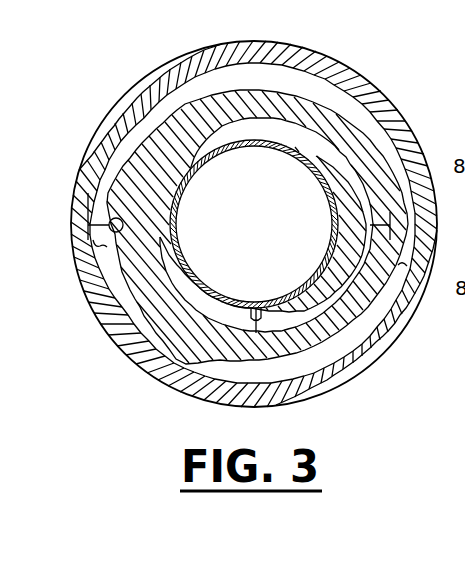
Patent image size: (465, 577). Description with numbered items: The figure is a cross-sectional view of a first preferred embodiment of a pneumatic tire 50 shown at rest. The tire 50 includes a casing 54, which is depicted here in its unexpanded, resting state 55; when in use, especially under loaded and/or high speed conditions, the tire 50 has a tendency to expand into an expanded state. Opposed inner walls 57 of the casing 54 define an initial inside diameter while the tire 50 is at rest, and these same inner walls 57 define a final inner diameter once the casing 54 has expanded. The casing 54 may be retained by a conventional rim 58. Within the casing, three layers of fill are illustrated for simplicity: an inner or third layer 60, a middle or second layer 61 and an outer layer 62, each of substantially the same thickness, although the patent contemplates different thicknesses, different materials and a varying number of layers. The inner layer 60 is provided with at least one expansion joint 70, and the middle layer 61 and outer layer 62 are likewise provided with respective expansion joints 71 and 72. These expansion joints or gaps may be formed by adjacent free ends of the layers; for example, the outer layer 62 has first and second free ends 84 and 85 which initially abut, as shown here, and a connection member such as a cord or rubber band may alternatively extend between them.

The pneumatic tire 50 is at (383, 367).
The casing 54 is at (336, 382).
The unexpanded, resting state 55 is at (405, 337).
The inner walls 57 is at (166, 372).
The rim 58 is at (333, 223).
The inner or third layer 60 is at (342, 177).
The middle or second layer 61 is at (293, 103).
The outer layer 62 is at (357, 117).
The expansion joint 70 is at (256, 303).
The expansion joint 71 is at (408, 268).
The expansion joint 72 is at (83, 152).
The first free end 84 is at (70, 215).
The second free end 85 is at (80, 247).